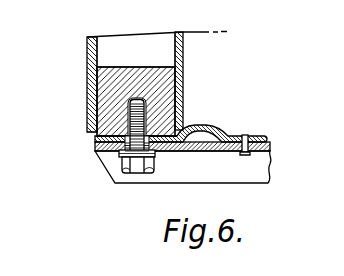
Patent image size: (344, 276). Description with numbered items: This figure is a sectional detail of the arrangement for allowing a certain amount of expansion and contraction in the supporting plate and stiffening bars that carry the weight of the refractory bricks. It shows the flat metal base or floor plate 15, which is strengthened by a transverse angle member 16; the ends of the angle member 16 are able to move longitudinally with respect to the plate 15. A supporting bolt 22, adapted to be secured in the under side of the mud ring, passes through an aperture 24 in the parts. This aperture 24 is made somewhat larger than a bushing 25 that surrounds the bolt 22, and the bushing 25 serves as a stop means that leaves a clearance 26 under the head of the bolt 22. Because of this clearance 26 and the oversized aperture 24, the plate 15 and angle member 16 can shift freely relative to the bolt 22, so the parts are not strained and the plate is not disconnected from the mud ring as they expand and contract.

The plate 15 is at (225, 135).
The angle member 16 is at (183, 159).
The bolt 22 is at (131, 115).
The aperture 24 is at (110, 155).
The bushing 25 is at (128, 160).
The clearance 26 is at (160, 151).